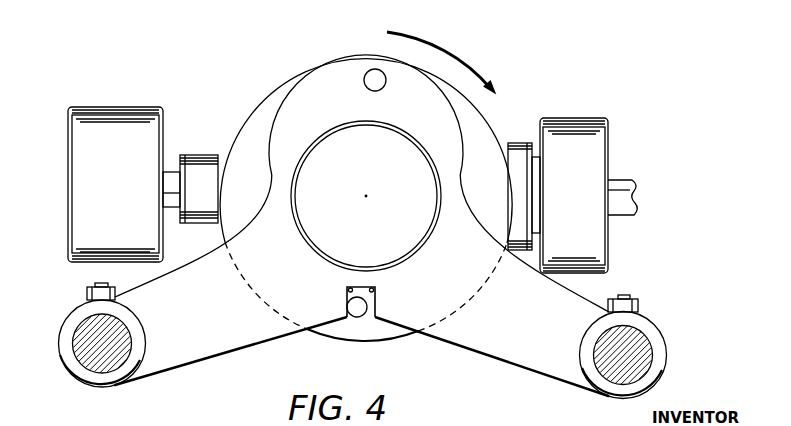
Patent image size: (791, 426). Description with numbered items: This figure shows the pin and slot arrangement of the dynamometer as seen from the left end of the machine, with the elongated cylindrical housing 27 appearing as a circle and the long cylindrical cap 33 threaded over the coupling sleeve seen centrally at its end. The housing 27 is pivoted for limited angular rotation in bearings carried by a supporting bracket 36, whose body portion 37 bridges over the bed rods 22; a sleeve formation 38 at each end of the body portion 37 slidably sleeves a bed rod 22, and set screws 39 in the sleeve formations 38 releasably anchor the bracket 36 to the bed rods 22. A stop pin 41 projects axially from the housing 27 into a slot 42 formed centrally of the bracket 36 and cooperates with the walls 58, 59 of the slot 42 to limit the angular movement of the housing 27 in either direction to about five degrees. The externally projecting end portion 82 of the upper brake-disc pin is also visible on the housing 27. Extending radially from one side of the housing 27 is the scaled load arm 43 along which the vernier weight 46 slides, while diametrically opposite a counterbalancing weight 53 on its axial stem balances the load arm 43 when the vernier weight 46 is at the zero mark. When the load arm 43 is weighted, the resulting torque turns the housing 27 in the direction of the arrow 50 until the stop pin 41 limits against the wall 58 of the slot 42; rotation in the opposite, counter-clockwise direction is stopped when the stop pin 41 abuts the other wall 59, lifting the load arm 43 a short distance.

The housing 27 is at (288, 68).
The supporting bracket 36 is at (408, 112).
The cylindrical cap 33 is at (328, 132).
The end portion 82 is at (373, 69).
The arrow 50 is at (433, 45).
The counterbalancing weight 53 is at (135, 80).
The vernier weight 46 is at (600, 90).
The load arm 43 is at (638, 185).
The sleeve formation 38 is at (68, 318).
The bed rods 22 is at (85, 352).
The set screws 39 is at (97, 285).
The body portion 37 is at (245, 347).
The stop pin 41 is at (370, 317).
The slot 42 is at (357, 287).
The wall 58 is at (347, 288).
The wall 59 is at (376, 288).